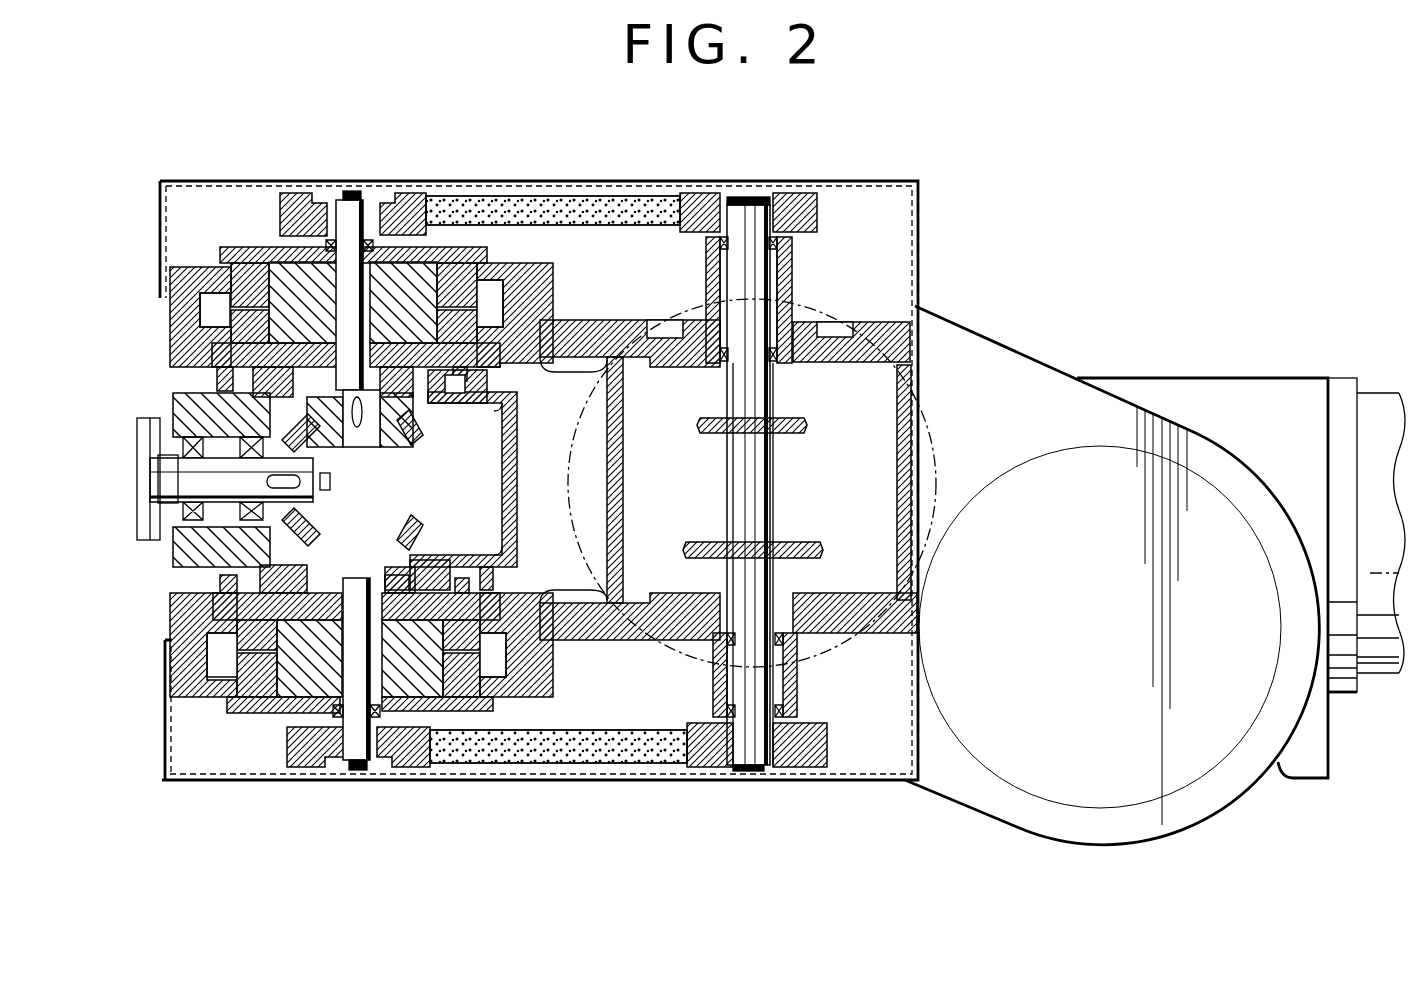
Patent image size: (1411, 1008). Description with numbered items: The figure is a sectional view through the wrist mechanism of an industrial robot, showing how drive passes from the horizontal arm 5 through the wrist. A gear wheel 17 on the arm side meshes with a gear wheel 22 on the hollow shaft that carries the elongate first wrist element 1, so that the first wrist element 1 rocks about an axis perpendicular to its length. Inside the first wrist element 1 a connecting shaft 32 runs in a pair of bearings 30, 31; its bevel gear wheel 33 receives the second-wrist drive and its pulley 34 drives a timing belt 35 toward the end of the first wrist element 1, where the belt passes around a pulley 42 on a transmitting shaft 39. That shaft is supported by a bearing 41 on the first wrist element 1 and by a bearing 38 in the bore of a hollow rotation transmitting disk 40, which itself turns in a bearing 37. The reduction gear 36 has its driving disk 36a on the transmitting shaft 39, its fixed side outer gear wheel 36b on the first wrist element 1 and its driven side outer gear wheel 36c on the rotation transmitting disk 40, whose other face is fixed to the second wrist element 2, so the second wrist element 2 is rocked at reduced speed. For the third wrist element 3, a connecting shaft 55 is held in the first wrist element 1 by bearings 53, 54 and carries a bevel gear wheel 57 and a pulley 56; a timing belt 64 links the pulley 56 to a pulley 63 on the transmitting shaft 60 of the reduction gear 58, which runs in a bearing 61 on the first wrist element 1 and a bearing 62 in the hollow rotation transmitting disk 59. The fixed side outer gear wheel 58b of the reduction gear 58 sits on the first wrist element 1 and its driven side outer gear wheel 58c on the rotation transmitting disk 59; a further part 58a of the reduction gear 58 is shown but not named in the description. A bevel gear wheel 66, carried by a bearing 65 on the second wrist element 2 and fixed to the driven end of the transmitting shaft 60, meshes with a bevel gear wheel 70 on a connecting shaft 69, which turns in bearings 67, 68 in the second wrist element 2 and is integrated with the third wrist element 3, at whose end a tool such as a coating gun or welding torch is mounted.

The first wrist element 1 is at (620, 330).
The second wrist element 2 is at (506, 518).
The third wrist element 3 is at (140, 433).
The horizontal arm 5 is at (1220, 378).
The gear wheel 17 is at (1043, 440).
The gear wheel 22 is at (940, 440).
The bearing 30 is at (768, 600).
The bearing 31 is at (797, 705).
The connecting shaft 32 is at (792, 673).
The bevel gear wheel 33 is at (728, 543).
The pulley 34 is at (800, 768).
The timing belt 35 is at (590, 764).
The reduction gear 36 is at (230, 720).
The driving disk 36a is at (290, 702).
The fixed side outer gear wheel 36b is at (240, 688).
The driven side outer gear wheel 36c is at (240, 648).
The bearing 37 is at (200, 608).
The bearing 38 is at (373, 590).
The transmitting shaft 39 is at (361, 750).
The rotation transmitting disk 40 is at (397, 576).
The bearing 41 is at (322, 736).
The pulley 42 is at (410, 738).
The bearing 53 is at (780, 365).
The bearing 54 is at (795, 248).
The connecting shaft 55 is at (752, 197).
The pulley 56 is at (793, 195).
The bevel gear wheel 57 is at (716, 433).
The reduction gear 58 is at (266, 246).
The motor end plate 58a is at (434, 250).
The fixed side outer gear wheel 58b is at (456, 268).
The driven side outer gear wheel 58c is at (518, 294).
The rotation transmitting disk 59 is at (228, 373).
The transmitting shaft 60 is at (352, 191).
The bearing 61 is at (324, 193).
The bearing 62 is at (333, 390).
The pulley 63 is at (419, 247).
The timing belt 64 is at (643, 198).
The bearing 65 is at (430, 414).
The bevel gear wheel 66 is at (378, 442).
The bearing 67 is at (192, 527).
The bearing 68 is at (190, 490).
The connecting shaft 69 is at (190, 470).
The bevel gear wheel 70 is at (316, 503).